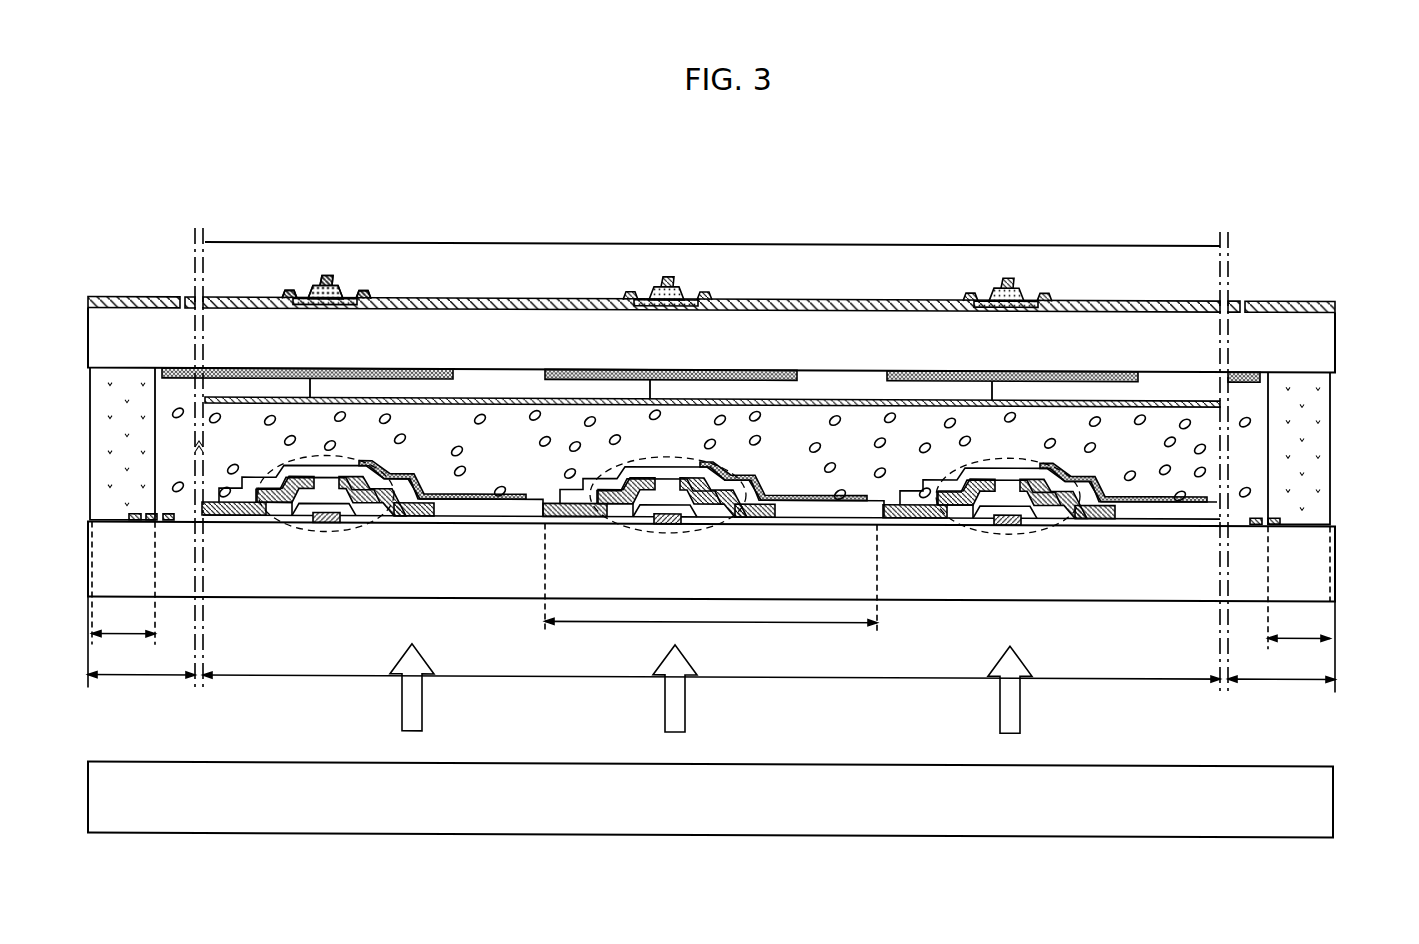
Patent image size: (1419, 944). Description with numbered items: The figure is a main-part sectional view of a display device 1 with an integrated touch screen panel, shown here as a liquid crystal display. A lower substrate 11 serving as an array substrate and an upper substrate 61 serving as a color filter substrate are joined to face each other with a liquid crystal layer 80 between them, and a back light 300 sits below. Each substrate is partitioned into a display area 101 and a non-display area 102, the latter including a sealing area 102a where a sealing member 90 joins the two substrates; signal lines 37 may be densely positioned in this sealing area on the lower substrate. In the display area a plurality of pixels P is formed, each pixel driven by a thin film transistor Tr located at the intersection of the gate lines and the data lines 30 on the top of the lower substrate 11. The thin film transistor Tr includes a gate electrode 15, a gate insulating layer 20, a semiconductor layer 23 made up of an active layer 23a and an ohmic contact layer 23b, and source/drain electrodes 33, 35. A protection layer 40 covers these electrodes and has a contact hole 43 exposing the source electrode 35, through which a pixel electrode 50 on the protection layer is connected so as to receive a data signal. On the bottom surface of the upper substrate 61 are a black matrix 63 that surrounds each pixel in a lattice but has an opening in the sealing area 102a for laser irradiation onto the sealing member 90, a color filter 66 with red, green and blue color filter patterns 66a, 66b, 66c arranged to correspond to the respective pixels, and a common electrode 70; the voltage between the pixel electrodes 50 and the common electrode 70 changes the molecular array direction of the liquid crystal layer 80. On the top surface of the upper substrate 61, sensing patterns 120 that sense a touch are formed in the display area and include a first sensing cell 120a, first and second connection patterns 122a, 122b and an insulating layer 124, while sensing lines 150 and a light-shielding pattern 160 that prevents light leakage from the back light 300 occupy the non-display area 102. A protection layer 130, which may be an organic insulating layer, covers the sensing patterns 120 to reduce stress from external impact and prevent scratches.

The display device with integrated touch screen panel 1 is at (1203, 204).
The lower substrate 11 is at (1328, 579).
The gate electrode 15 is at (328, 525).
The gate insulating layer 20 is at (477, 525).
The semiconductor layer 23 is at (250, 722).
The active layer 23a is at (277, 525).
The ohmic contact layer 23b is at (290, 525).
The data line 30 is at (217, 525).
The source/drain electrode 33 is at (305, 482).
The source electrode 35 is at (346, 482).
The signal line 37 is at (1277, 517).
The protection layer 40 is at (485, 498).
The contact hole 43 is at (426, 483).
The pixel electrode 50 is at (524, 496).
The upper substrate 61 is at (1325, 352).
The black matrix 63 is at (232, 368).
The color filter 66 is at (510, 150).
The red color filter pattern 66a is at (514, 382).
The green color filter pattern 66b is at (845, 385).
The blue color filter pattern 66c is at (1157, 385).
The common electrode 70 is at (1200, 404).
The liquid crystal layer 80 is at (1212, 440).
The sealing member 90 is at (1320, 487).
The display area 101 is at (687, 688).
The non-display area 102 is at (711, 655).
The sealing area 102a is at (711, 654).
The sensing pattern 120 is at (440, 178).
The first sensing cell 120a is at (278, 297).
The first connection pattern 122a is at (372, 296).
The second connection pattern 122b is at (330, 276).
The insulating layer 124 is at (314, 287).
The protection layer 130 is at (471, 262).
The sensing line 150 is at (1234, 300).
The light-shielding pattern 160 is at (1337, 305).
The back light 300 is at (1322, 800).
The pixel P is at (711, 632).
The thin film transistor Tr is at (272, 468).